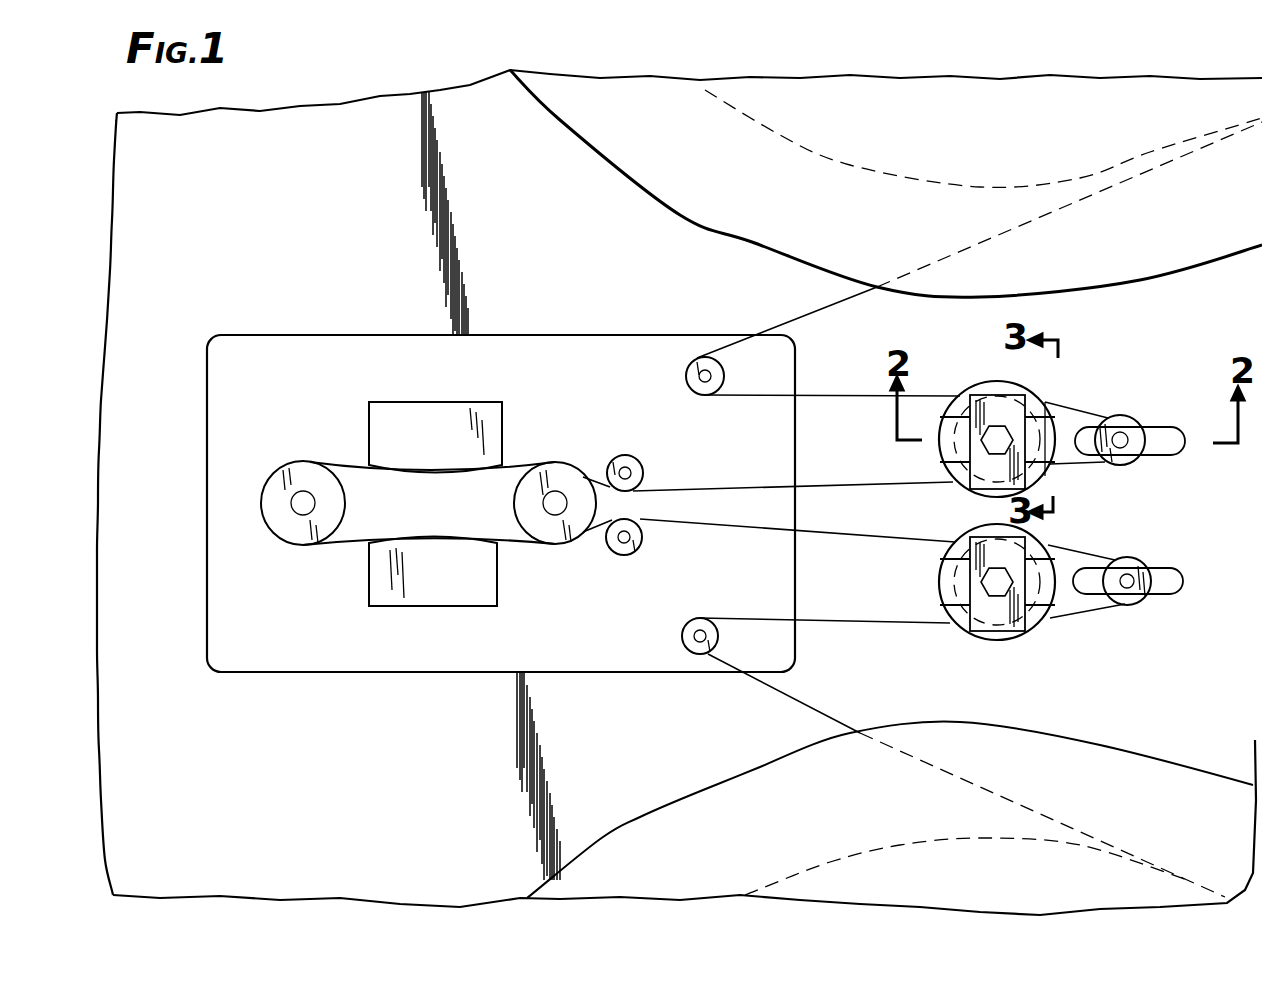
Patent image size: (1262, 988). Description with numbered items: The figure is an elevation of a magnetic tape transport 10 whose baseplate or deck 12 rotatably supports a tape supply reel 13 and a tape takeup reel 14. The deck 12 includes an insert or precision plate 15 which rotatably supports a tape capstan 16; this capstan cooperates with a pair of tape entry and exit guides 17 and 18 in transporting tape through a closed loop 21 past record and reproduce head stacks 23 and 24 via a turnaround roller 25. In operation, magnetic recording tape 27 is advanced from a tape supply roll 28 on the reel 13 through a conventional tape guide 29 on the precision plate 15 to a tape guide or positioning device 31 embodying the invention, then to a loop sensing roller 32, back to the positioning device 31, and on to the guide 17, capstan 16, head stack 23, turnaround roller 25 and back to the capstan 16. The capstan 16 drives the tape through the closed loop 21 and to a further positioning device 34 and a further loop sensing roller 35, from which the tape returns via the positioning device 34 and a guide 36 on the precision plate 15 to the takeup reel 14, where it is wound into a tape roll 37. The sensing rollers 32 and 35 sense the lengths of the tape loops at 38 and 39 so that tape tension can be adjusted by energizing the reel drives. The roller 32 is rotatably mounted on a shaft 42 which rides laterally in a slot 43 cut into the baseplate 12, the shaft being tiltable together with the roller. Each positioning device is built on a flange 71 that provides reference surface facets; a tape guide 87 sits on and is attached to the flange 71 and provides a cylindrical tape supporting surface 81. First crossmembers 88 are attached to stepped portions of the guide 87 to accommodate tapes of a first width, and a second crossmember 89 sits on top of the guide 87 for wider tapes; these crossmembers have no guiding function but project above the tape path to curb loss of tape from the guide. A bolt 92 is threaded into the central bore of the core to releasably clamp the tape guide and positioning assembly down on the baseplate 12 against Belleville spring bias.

The magnetic tape transport 10 is at (380, 92).
The baseplate or deck 12 is at (350, 238).
The tape supply reel 13 is at (690, 207).
The tape takeup reel 14 is at (640, 820).
The insert or precision plate 15 is at (338, 655).
The tape capstan 16 is at (525, 496).
The tape entry guide 17 is at (612, 458).
The tape exit guide 18 is at (613, 553).
The closed loop 21 is at (360, 465).
The record and reproduce head stack 23 is at (445, 452).
The record and reproduce head stack 24 is at (445, 586).
The turnaround roller 25 is at (332, 490).
The magnetic recording tape 27 is at (808, 312).
The tape supply roll 28 is at (850, 160).
The tape guide 29 is at (687, 376).
The tape guide or positioning device 31 is at (1004, 427).
The loop sensing roller 32 is at (1126, 424).
The tape guide or positioning device 34 is at (973, 648).
The loop sensing roller 35 is at (1137, 605).
The guide 36 is at (683, 636).
The tape roll 37 is at (830, 862).
The tape loop 38 is at (1092, 393).
The tape loop 39 is at (1060, 615).
The shaft 42 is at (1126, 448).
The slot 43 is at (1178, 432).
The flange 71 is at (942, 478).
The cylindrical tape guide or supporting surface 81 is at (955, 480).
The tape guide 87 is at (970, 405).
The first crossmembers 88 is at (1053, 455).
The second crossmember 89 is at (1008, 393).
The bolt 92 is at (983, 432).